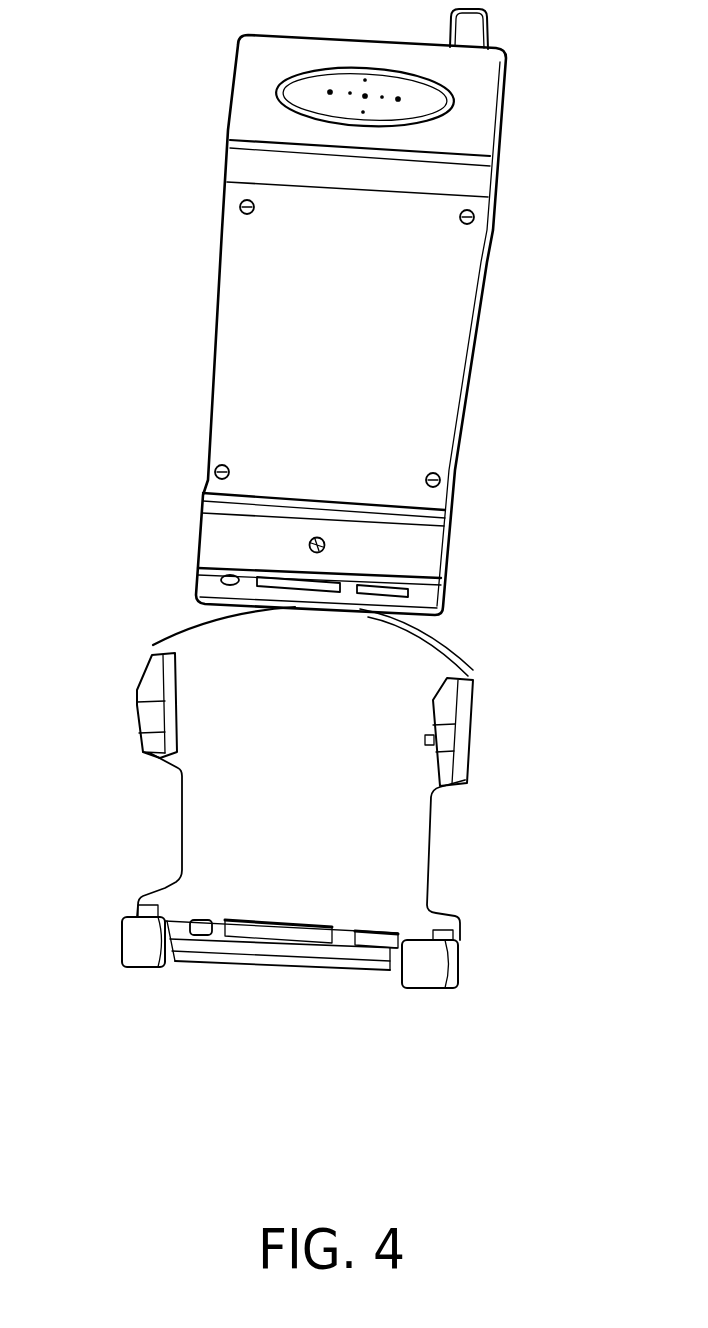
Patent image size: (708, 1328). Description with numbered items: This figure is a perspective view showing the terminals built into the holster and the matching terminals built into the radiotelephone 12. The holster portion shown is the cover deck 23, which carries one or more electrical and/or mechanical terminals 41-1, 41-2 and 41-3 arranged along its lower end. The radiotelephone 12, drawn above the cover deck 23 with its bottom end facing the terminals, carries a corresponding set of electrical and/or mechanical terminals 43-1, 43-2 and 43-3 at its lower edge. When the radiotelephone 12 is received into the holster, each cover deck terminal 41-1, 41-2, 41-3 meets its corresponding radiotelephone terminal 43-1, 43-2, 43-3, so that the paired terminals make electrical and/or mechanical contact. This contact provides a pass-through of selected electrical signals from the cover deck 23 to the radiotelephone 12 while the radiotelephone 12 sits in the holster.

The radiotelephone 12 is at (477, 115).
The cover deck 23 is at (473, 717).
The terminal 41-1 is at (192, 921).
The terminal 41-2 is at (282, 927).
The terminal 41-3 is at (357, 934).
The terminal 43-1 is at (228, 586).
The terminal 43-2 is at (327, 592).
The terminal 43-3 is at (401, 598).